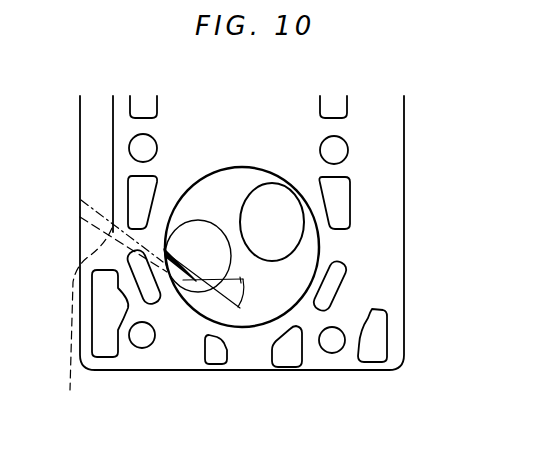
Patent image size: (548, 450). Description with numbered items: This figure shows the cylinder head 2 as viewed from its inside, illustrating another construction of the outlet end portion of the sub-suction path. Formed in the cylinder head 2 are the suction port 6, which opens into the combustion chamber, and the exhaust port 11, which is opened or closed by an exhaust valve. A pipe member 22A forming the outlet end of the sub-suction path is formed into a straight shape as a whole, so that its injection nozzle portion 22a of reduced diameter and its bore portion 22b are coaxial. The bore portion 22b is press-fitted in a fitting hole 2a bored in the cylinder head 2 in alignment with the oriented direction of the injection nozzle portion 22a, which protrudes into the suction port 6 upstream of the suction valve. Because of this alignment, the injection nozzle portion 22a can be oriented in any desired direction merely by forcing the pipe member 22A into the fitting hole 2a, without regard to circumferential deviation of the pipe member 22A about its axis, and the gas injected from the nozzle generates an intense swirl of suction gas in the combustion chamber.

The cylinder head 2 is at (397, 163).
The fitting hole 2a is at (80, 202).
The suction port 6 is at (203, 227).
The exhaust port 11 is at (290, 238).
The injection nozzle portion 22a is at (186, 277).
The bore portion 22b is at (70, 370).
The pipe member 22A is at (152, 413).